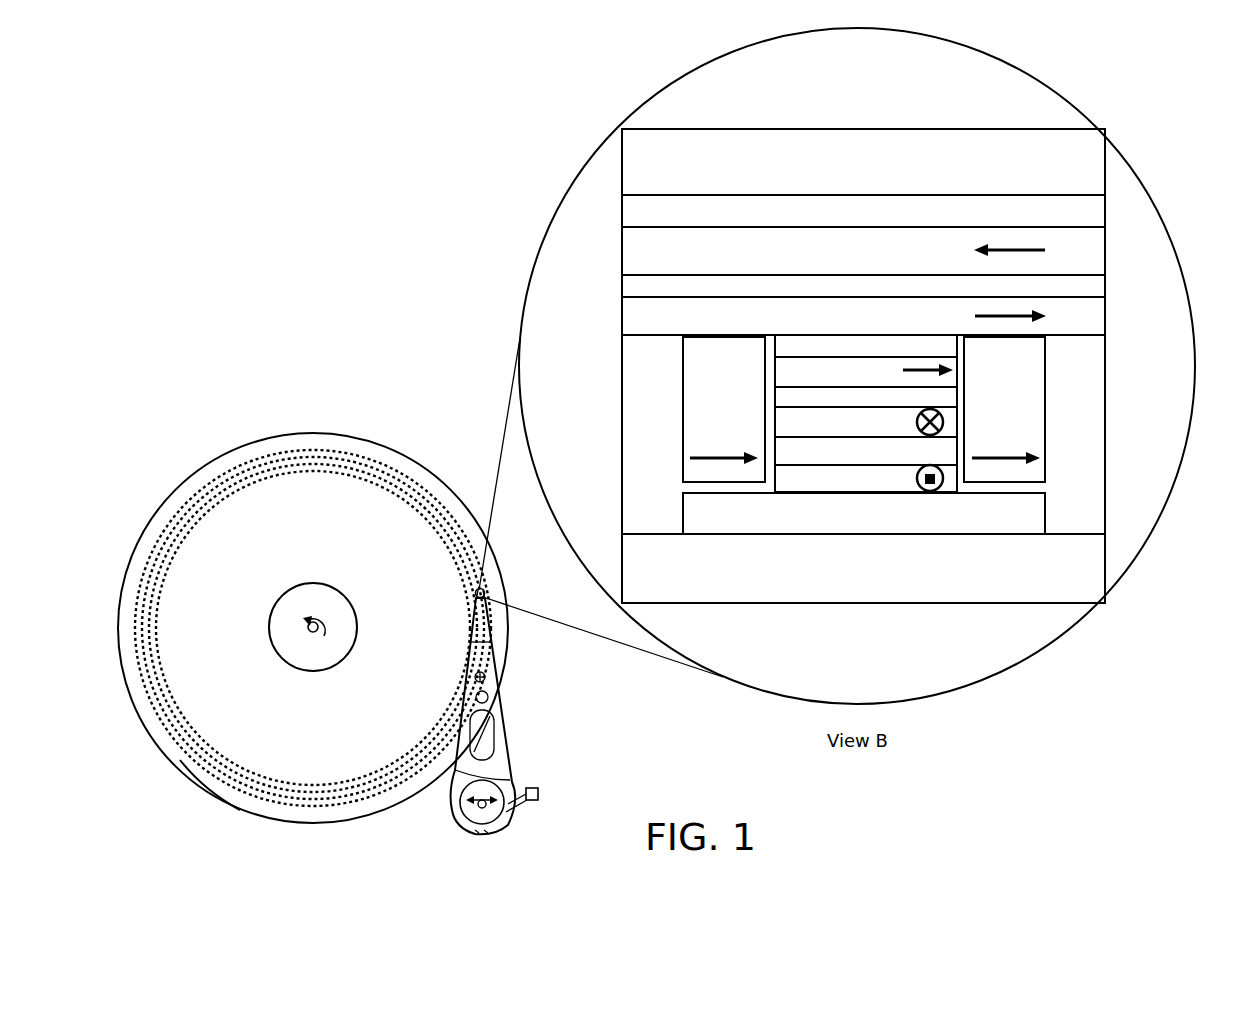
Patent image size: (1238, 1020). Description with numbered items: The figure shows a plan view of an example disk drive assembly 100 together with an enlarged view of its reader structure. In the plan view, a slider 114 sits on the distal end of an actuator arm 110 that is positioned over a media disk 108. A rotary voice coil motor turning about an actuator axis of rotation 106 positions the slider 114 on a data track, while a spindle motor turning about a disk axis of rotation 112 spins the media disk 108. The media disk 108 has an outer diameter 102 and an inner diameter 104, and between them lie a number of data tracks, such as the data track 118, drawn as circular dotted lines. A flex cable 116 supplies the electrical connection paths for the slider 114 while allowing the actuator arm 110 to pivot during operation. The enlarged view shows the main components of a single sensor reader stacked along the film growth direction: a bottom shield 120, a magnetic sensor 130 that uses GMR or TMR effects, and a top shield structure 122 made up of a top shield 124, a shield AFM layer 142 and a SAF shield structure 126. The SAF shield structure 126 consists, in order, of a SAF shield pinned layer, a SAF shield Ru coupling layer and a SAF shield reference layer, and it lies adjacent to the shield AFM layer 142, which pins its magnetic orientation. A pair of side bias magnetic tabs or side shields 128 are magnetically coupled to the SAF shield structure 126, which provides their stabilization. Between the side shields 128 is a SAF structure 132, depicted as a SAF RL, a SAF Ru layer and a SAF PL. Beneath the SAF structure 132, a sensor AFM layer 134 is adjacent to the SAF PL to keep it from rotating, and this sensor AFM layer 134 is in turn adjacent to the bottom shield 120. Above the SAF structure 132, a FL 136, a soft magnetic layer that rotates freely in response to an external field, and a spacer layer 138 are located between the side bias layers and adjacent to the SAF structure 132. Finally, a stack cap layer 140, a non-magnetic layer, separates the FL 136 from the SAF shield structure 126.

The disk drive assembly 100 is at (280, 108).
The outer diameter 102 is at (172, 490).
The inner diameter 104 is at (318, 584).
The actuator axis of rotation 106 is at (478, 806).
The media disk 108 is at (196, 782).
The actuator arm 110 is at (505, 746).
The disk axis of rotation 112 is at (318, 622).
The slider 114 is at (486, 594).
The flex cable 116 is at (513, 826).
The data track 118 is at (228, 488).
The bottom shield 120 is at (979, 580).
The top shield structure 122 is at (1107, 129).
The top shield 124 is at (972, 174).
The SAF shield structure 126 is at (621, 227).
The side shields 128 is at (740, 378).
The magnetic sensor 130 is at (1107, 337).
The SAF structure 132 is at (781, 409).
The sensor AFM layer 134 is at (980, 524).
The FL 136 is at (896, 380).
The spacer layer 138 is at (921, 406).
The stack cap layer 140 is at (929, 355).
The shield AFM layer 142 is at (998, 222).